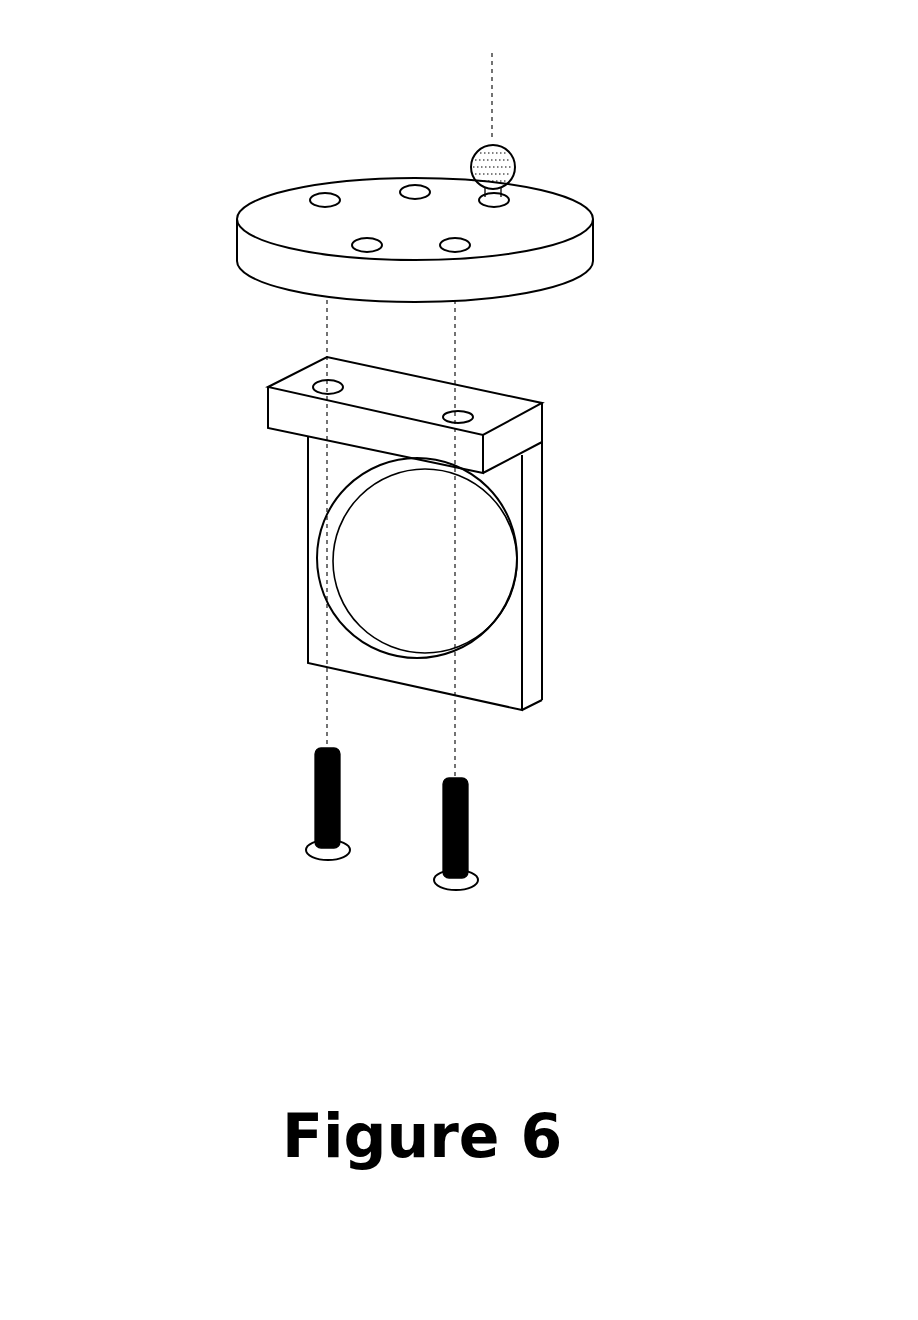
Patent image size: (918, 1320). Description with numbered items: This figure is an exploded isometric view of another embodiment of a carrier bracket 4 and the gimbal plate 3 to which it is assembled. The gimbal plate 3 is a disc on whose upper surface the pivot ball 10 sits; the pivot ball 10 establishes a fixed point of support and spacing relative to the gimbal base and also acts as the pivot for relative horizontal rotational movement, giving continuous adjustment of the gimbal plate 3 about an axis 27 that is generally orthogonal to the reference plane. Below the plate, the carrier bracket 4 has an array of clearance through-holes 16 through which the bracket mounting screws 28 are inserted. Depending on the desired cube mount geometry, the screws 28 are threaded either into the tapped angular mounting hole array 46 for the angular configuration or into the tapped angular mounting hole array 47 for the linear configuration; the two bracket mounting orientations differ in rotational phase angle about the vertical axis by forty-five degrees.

The gimbal plate 3 is at (210, 223).
The carrier bracket 4 is at (552, 473).
The pivot ball 10 is at (540, 150).
The clearance through-holes 16 is at (362, 374).
The axis 27 is at (522, 56).
The bracket mounting screws 28 is at (292, 830).
The tapped angular mounting hole array 46 is at (280, 191).
The tapped angular mounting hole array 47 is at (398, 158).